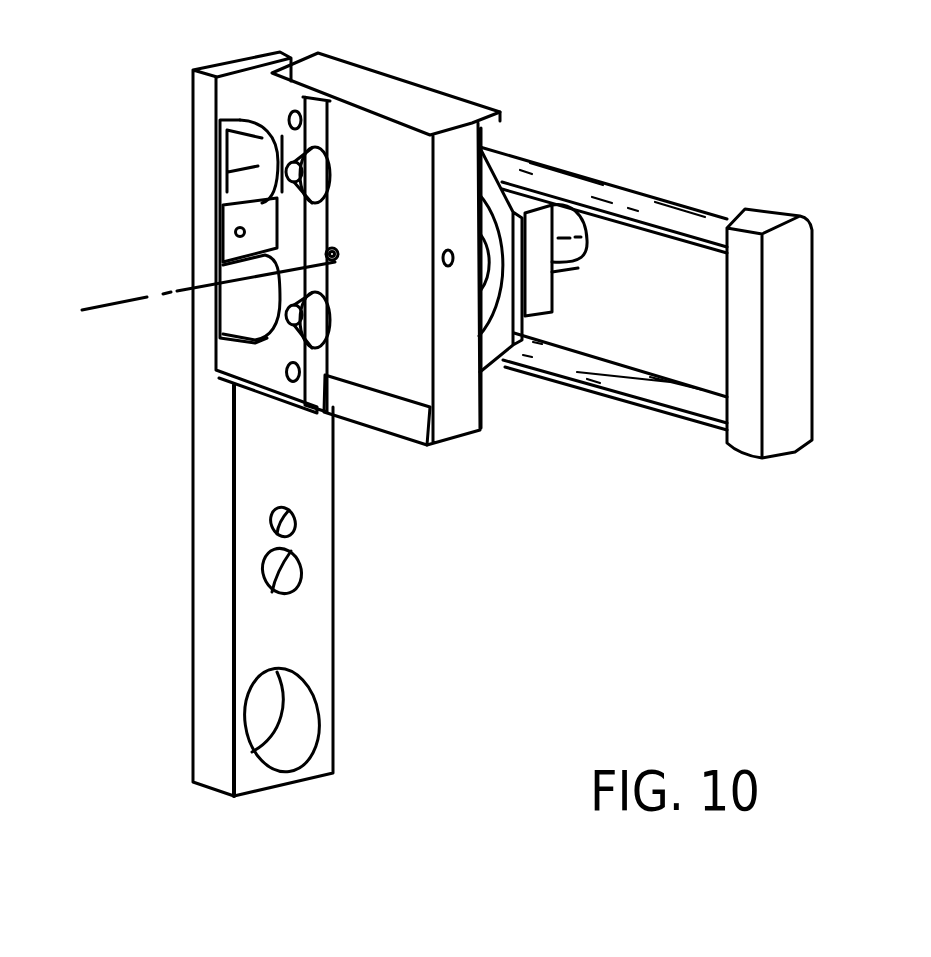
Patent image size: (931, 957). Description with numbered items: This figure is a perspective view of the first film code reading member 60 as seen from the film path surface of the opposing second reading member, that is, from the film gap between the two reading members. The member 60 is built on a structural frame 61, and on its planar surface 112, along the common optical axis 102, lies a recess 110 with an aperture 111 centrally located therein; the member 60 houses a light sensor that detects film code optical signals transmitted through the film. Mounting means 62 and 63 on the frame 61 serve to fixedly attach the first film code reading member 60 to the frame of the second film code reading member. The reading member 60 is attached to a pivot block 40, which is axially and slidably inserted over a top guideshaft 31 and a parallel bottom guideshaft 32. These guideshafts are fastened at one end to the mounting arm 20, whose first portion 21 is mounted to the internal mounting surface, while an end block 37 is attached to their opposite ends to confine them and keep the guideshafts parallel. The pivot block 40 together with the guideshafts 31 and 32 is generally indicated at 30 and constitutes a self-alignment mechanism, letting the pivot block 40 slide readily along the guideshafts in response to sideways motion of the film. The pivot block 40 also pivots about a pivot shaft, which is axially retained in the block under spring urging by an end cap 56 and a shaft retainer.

The mounting arm 20 is at (183, 611).
The first portion of the mounting arm 21 is at (334, 589).
The self-alignment mechanism 30 is at (622, 170).
The top guideshaft 31 is at (703, 206).
The bottom guideshaft 32 is at (656, 412).
The end block 37 is at (792, 460).
The pivot block 40 is at (480, 146).
The end cap 56 is at (583, 260).
The first film code reading member 60 is at (472, 453).
The structural frame 61 is at (483, 397).
The mounting means 62 is at (294, 111).
The mounting means 63 is at (292, 382).
The common optical axis 102 is at (112, 301).
The recess 110 is at (338, 266).
The aperture 111 is at (336, 248).
The planar surface 112 is at (400, 347).